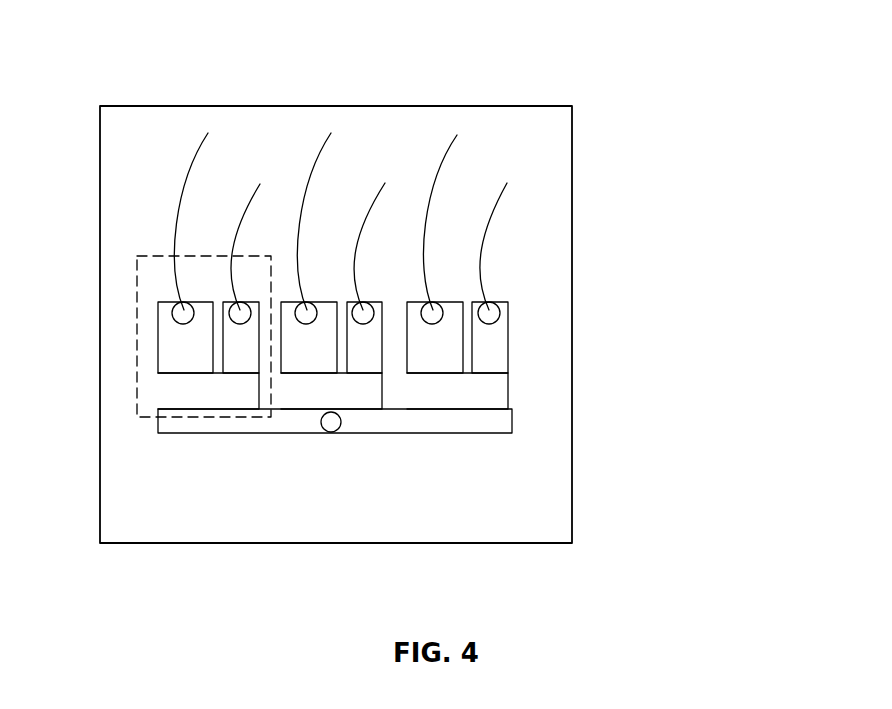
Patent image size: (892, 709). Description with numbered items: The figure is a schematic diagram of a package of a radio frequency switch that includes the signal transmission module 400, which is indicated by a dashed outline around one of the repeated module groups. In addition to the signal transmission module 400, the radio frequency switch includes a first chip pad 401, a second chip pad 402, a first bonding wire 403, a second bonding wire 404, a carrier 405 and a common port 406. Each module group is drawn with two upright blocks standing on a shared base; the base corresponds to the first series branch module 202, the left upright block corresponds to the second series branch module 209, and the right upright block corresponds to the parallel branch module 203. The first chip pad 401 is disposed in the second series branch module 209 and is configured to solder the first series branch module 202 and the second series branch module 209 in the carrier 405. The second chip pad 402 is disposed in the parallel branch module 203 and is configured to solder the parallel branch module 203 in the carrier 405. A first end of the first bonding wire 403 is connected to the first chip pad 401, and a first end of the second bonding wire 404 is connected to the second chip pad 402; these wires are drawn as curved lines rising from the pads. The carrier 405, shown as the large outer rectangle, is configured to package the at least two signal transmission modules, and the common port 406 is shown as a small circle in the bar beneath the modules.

The signal transmission module 400 is at (203, 255).
The first chip pad 401 is at (428, 313).
The second chip pad 402 is at (492, 312).
The first bonding wire 403 is at (445, 162).
The second bonding wire 404 is at (482, 230).
The carrier 405 is at (400, 518).
The common port 406 is at (342, 423).
The first series branch module 202 is at (460, 393).
The parallel branch module 203 is at (495, 338).
The second series branch module 209 is at (450, 357).